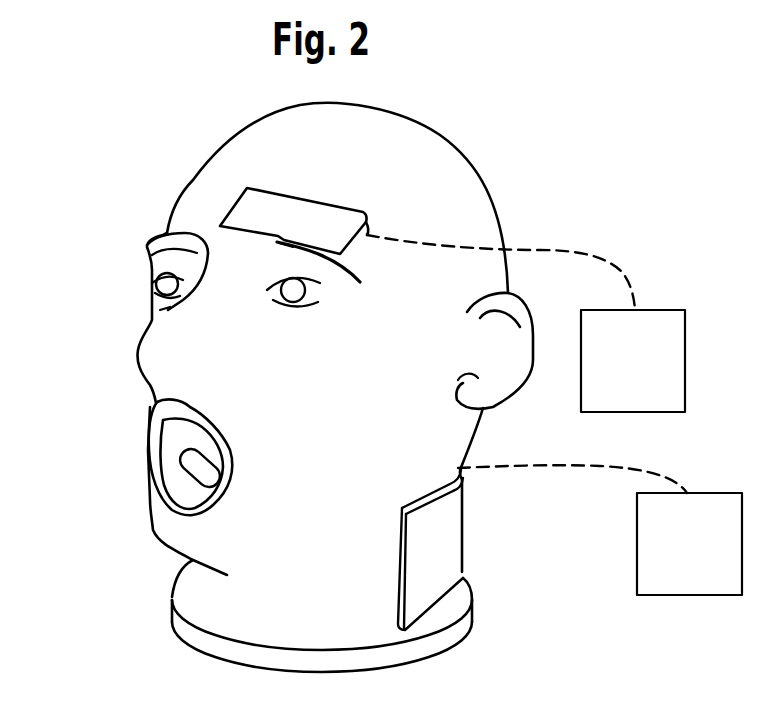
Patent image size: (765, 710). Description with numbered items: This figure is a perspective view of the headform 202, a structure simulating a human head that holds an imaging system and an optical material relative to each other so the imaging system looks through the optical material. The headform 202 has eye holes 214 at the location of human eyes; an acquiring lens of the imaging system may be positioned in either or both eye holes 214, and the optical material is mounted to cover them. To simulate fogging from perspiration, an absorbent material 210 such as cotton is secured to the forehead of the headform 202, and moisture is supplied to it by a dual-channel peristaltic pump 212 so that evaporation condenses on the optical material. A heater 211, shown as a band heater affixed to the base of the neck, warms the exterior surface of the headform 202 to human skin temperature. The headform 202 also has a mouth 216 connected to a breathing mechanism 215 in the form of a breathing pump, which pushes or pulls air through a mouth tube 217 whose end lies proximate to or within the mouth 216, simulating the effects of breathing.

The headform 202 is at (190, 112).
The absorbent material 210 is at (363, 212).
The heater 211 is at (447, 523).
The dual-channel peristaltic pump 212 is at (685, 320).
The eye hole 214 is at (267, 283).
The breathing mechanism 215 is at (637, 565).
The mouth 216 is at (150, 456).
The mouth tube 217 is at (202, 475).